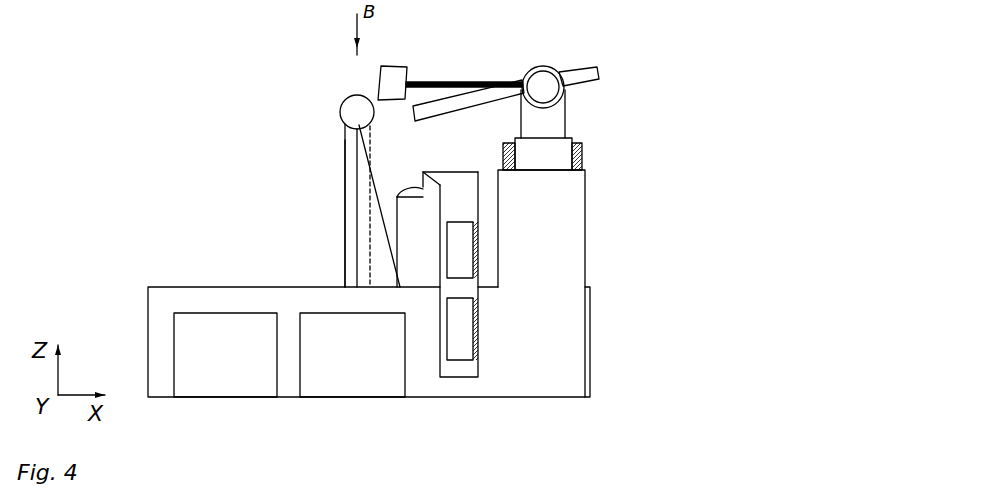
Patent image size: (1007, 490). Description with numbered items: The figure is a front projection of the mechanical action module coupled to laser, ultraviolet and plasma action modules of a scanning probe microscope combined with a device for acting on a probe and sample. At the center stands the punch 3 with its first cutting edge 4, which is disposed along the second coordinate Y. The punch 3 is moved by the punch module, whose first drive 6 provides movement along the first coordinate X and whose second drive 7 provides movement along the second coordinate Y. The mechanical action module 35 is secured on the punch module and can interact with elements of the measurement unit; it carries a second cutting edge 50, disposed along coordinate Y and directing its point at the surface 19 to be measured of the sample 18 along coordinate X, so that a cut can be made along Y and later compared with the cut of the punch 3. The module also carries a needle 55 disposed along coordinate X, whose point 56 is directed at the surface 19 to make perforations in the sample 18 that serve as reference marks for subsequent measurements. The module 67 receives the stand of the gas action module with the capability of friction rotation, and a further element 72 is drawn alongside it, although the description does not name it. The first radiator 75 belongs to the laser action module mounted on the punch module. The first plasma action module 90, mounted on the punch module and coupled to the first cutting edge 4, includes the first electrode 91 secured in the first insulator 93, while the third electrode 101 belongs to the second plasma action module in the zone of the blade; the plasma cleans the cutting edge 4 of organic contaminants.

The punch 3 is at (357, 195).
The first cutting edge 4 is at (341, 118).
The first drive 6 is at (257, 341).
The second drive 7 is at (313, 336).
The sample 18 is at (392, 92).
The surface to be measured 19 is at (438, 109).
The mechanical action module 35 is at (450, 380).
The second cutting edge 50 is at (424, 174).
The needle 55 is at (411, 201).
The point of the needle 56 is at (394, 207).
The module 67 is at (580, 156).
The column 72 is at (586, 222).
The first radiator 75 is at (496, 81).
The first plasma action module 90 is at (344, 161).
The first electrode 91 is at (356, 110).
The first insulator 93 is at (357, 94).
The third electrode 101 is at (568, 43).